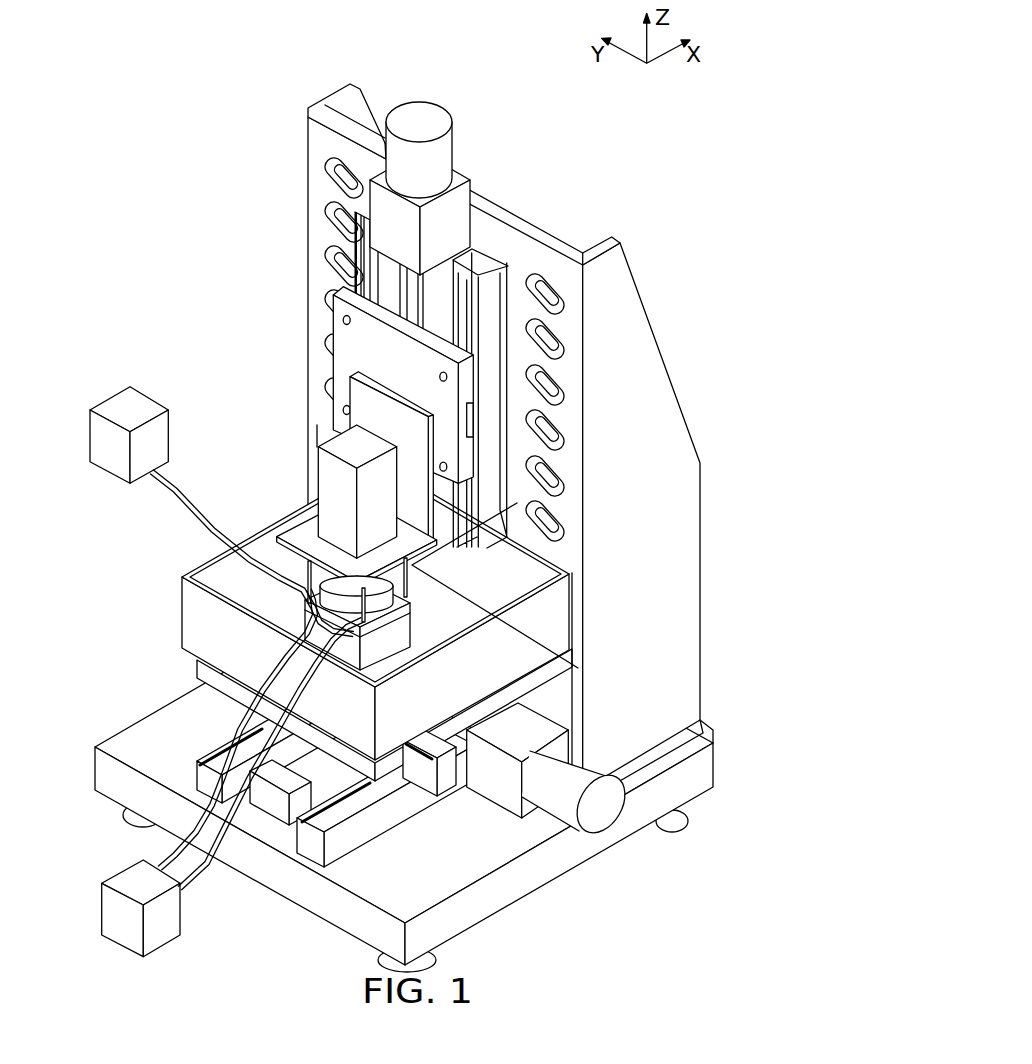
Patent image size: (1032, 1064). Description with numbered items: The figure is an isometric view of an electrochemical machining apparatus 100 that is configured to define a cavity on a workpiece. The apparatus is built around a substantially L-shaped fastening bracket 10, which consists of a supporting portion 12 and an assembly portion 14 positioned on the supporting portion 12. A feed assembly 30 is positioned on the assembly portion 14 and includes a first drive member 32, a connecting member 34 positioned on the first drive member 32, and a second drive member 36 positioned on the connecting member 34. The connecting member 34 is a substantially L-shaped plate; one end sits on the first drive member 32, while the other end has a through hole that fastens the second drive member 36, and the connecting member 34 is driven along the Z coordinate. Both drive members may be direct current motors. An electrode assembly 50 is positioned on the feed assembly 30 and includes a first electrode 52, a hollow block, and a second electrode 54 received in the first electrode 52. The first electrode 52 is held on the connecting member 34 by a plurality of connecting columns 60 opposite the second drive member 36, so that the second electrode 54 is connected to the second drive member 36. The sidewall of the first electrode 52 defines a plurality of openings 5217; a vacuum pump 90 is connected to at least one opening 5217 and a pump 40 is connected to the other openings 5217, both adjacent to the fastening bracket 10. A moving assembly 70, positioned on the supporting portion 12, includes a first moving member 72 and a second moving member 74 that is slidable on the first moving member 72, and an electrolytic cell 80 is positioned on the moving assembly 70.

The electrochemical machining apparatus 100 is at (253, 38).
The fastening bracket 10 is at (413, 528).
The supporting portion 12 is at (568, 853).
The assembly portion 14 is at (643, 713).
The feed assembly 30 is at (335, 325).
The first drive member 32 is at (388, 215).
The connecting member 34 is at (362, 347).
The second drive member 36 is at (325, 451).
The pump 40 is at (160, 438).
The electrode assembly 50 is at (522, 532).
The first electrode 52 is at (536, 556).
The second electrode 54 is at (480, 530).
The openings 5217 is at (405, 655).
The connecting columns 60 is at (400, 647).
The moving assembly 70 is at (416, 772).
The first moving member 72 is at (380, 818).
The second moving member 74 is at (503, 790).
The electrolytic cell 80 is at (193, 613).
The vacuum pump 90 is at (158, 937).